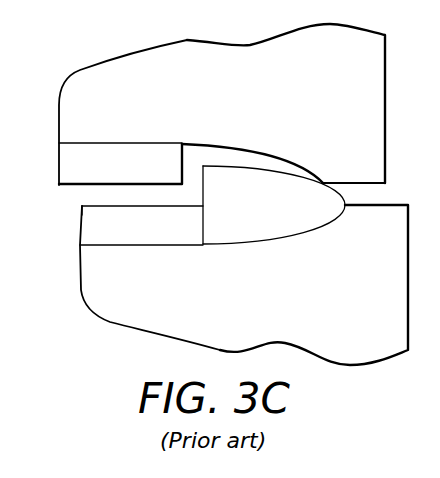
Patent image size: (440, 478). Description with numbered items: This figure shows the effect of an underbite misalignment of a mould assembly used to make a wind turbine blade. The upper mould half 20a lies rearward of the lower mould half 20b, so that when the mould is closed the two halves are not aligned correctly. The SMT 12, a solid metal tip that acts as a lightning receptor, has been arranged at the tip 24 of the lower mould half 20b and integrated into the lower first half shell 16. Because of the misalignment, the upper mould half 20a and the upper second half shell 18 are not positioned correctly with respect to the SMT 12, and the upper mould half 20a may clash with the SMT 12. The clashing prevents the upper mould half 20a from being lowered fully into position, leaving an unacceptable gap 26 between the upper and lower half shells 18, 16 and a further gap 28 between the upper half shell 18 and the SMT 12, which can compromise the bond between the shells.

The SMT 12 is at (272, 180).
The first half shell 16 is at (145, 238).
The second half shell 18 is at (118, 154).
The upper mould half 20a is at (241, 89).
The lower mould half 20b is at (265, 310).
The tip 24 is at (313, 233).
The gap 26 is at (86, 196).
The further gap 28 is at (200, 158).